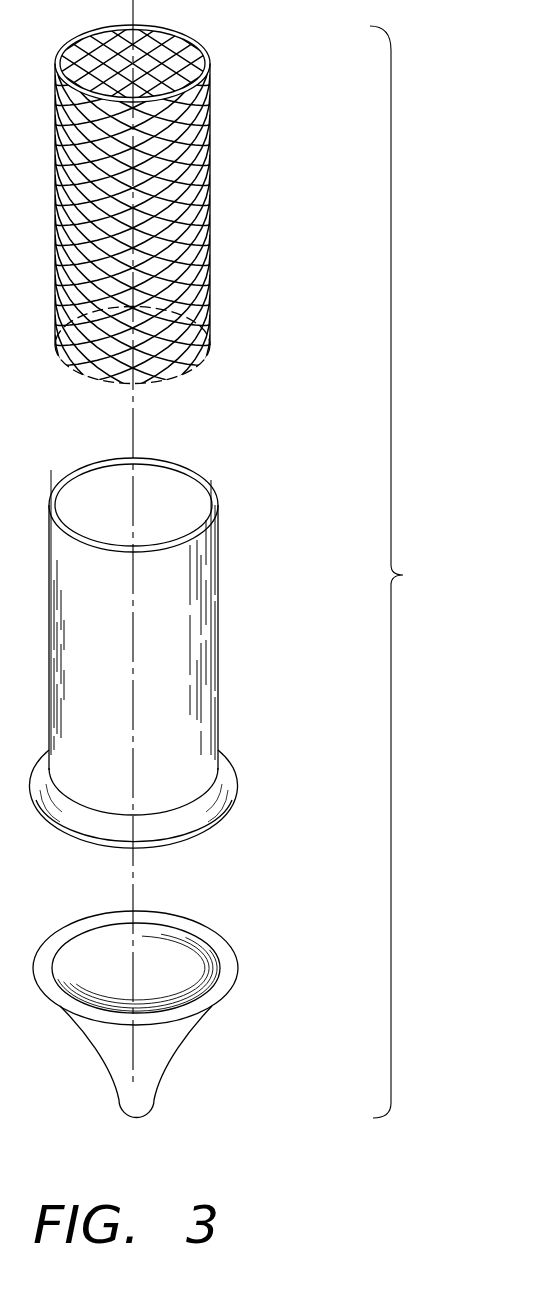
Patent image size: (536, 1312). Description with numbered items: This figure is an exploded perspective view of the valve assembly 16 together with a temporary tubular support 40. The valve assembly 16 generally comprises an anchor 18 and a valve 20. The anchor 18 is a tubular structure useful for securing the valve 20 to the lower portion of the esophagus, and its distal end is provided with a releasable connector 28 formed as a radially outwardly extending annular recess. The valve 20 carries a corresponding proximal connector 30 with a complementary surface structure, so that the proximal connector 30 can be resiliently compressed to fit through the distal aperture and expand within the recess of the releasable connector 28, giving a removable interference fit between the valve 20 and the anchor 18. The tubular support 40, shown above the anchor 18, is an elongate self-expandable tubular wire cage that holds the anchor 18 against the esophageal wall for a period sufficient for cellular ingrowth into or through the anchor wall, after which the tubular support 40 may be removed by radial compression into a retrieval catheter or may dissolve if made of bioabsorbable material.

The valve assembly 16 is at (406, 572).
The anchor 18 is at (224, 596).
The valve 20 is at (193, 1053).
The releasable connector 28 is at (238, 778).
The proximal connector 30 is at (226, 959).
The tubular support 40 is at (216, 182).